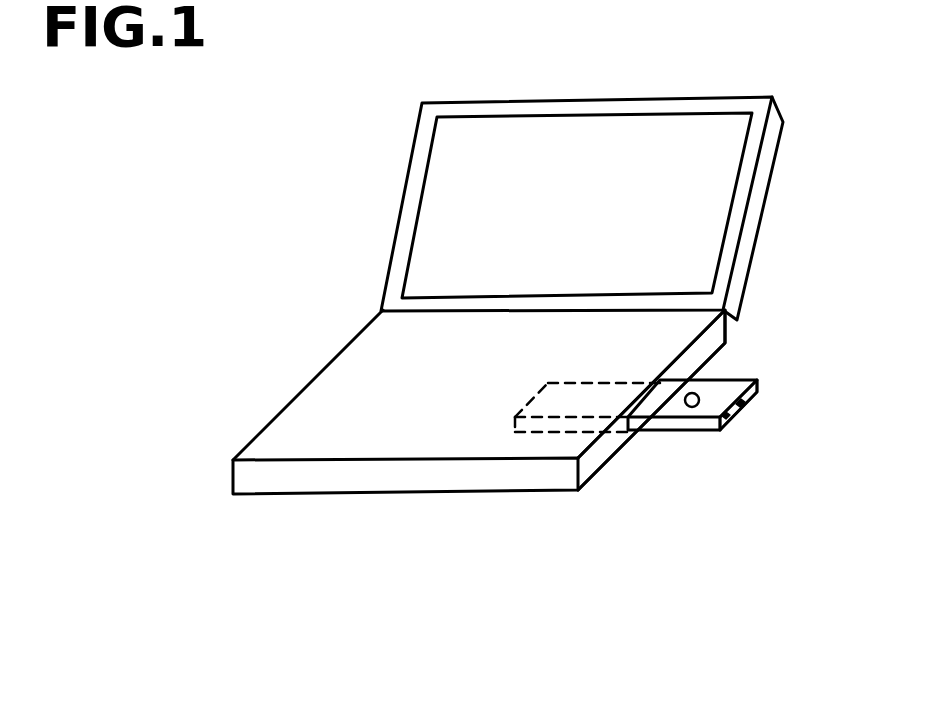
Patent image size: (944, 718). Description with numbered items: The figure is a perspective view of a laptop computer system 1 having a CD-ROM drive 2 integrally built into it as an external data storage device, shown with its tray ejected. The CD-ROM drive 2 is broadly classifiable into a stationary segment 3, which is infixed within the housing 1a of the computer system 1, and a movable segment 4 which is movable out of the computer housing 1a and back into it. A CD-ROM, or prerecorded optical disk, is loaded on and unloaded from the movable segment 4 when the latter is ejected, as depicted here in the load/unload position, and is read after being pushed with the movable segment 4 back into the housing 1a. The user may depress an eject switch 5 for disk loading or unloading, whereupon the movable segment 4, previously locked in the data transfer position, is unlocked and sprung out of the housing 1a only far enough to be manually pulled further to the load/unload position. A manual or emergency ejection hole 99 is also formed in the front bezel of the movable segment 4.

The laptop computer system 1 is at (795, 232).
The housing 1a is at (600, 467).
The CD-ROM drive 2 is at (775, 342).
The stationary segment 3 is at (594, 381).
The movable segment 4 is at (745, 401).
The eject switch 5 is at (733, 414).
The manual or emergency ejection hole 99 is at (722, 430).